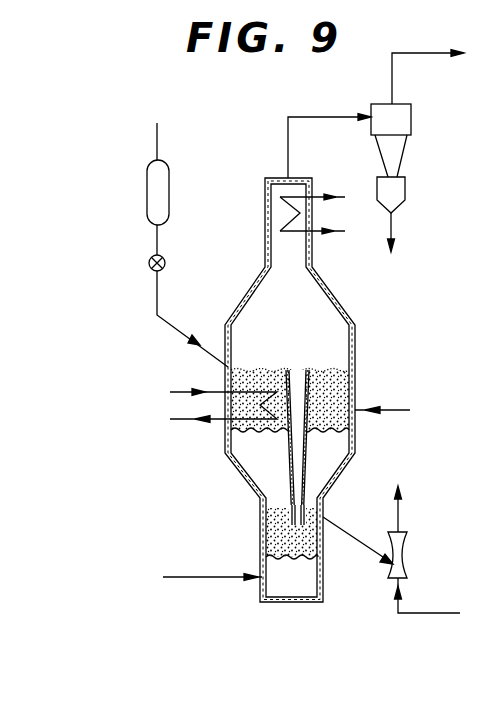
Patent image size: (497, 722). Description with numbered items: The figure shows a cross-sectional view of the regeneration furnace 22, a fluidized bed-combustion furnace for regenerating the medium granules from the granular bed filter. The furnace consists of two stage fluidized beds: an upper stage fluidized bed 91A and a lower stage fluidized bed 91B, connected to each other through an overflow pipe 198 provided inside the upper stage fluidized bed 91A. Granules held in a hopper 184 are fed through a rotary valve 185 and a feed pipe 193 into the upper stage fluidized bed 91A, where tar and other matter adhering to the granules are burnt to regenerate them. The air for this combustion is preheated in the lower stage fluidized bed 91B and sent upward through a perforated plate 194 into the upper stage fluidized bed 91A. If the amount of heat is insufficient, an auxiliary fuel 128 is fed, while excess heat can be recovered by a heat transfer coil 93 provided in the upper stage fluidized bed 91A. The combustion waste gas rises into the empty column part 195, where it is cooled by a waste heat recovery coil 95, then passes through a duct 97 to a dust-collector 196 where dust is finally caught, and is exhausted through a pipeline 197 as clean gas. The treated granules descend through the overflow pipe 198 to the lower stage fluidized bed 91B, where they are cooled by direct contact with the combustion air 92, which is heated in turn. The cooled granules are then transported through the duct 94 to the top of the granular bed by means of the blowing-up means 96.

The regeneration furnace 22 is at (358, 361).
The upper stage fluidized bed 91A is at (257, 372).
The lower stage fluidized bed 91B is at (266, 537).
The combustion air 92 is at (198, 578).
The heat transfer coil 93 is at (213, 422).
The duct 94 is at (348, 533).
The waste heat recovery coil 95 is at (316, 233).
The blowing-up means 96 is at (405, 550).
The duct 97 is at (300, 117).
The auxiliary fuel 128 is at (390, 410).
The hopper 184 is at (169, 183).
The rotary valve 185 is at (163, 258).
The feed pipe 193 is at (158, 315).
The perforated plate 194 is at (262, 432).
The empty column part 195 is at (322, 303).
The dust-collector 196 is at (411, 118).
The pipeline 197 is at (396, 53).
The overflow pipe 198 is at (304, 455).